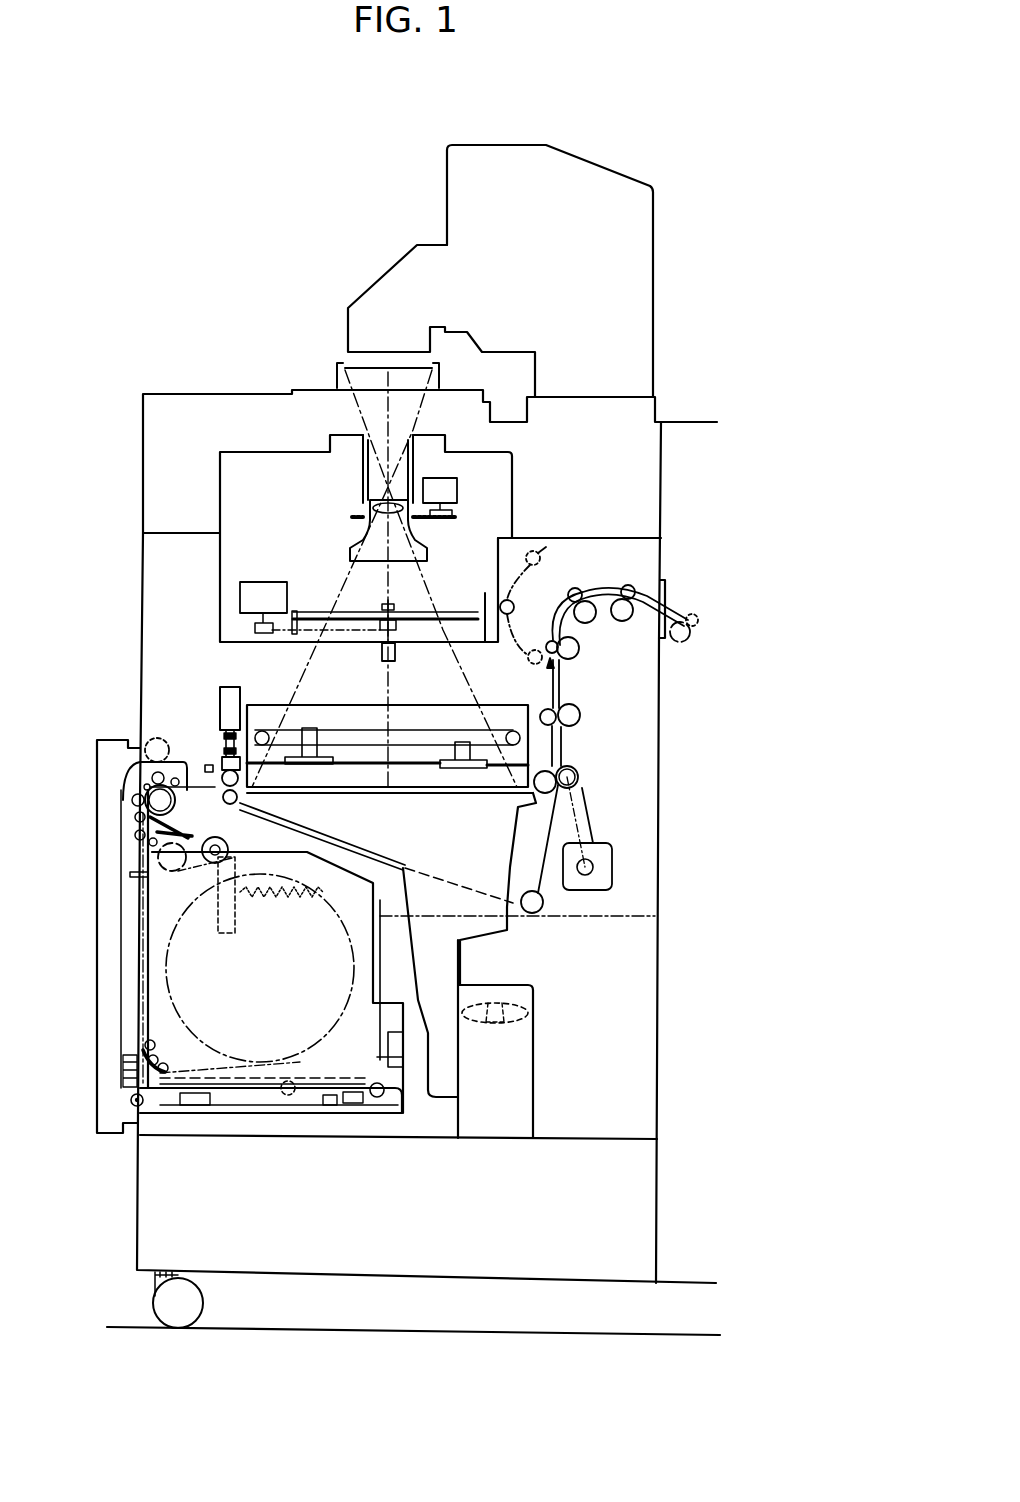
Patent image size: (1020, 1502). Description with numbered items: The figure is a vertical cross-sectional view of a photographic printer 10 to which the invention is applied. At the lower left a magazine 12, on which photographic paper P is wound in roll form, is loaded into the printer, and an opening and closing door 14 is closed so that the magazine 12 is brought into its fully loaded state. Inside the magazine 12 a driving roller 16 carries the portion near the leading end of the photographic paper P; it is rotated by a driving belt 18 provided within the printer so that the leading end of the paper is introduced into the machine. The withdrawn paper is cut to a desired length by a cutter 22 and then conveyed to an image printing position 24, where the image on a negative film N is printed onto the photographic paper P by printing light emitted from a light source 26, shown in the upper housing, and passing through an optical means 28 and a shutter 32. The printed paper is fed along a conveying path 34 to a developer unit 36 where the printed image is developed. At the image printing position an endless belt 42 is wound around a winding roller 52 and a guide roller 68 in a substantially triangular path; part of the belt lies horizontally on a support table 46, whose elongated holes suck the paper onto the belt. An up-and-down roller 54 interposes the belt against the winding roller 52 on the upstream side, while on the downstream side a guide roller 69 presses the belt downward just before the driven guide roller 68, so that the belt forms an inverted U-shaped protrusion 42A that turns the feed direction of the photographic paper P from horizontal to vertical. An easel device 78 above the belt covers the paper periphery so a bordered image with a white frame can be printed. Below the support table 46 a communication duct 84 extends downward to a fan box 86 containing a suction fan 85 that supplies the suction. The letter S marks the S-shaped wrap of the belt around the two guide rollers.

The photographic printer 10 is at (265, 299).
The magazine 12 is at (248, 1092).
The opening and closing door 14 is at (97, 1090).
The driving roller 16 is at (160, 800).
The driving belt 18 is at (175, 748).
The cutter 22 is at (211, 768).
The image printing position 24 is at (394, 776).
The light source 26 is at (640, 303).
The optical means 28 is at (368, 540).
The shutter 32 is at (445, 612).
The conveying path 34 is at (572, 685).
The developer unit 36 is at (733, 689).
The endless belt 42 is at (543, 900).
The inverted U-shaped protrusion 42A is at (558, 762).
The support table 46 is at (498, 820).
The winding roller 52 is at (233, 807).
The up-and-down roller 54 is at (240, 778).
The guide roller 68 is at (579, 777).
The guide roller 69 is at (560, 798).
The easel device 78 is at (348, 706).
The communication duct 84 is at (420, 958).
The suction fan 85 is at (528, 1005).
The fan box 86 is at (523, 1077).
The negative film N is at (355, 370).
The sensor S is at (395, 668).
The photographic paper P is at (318, 1030).